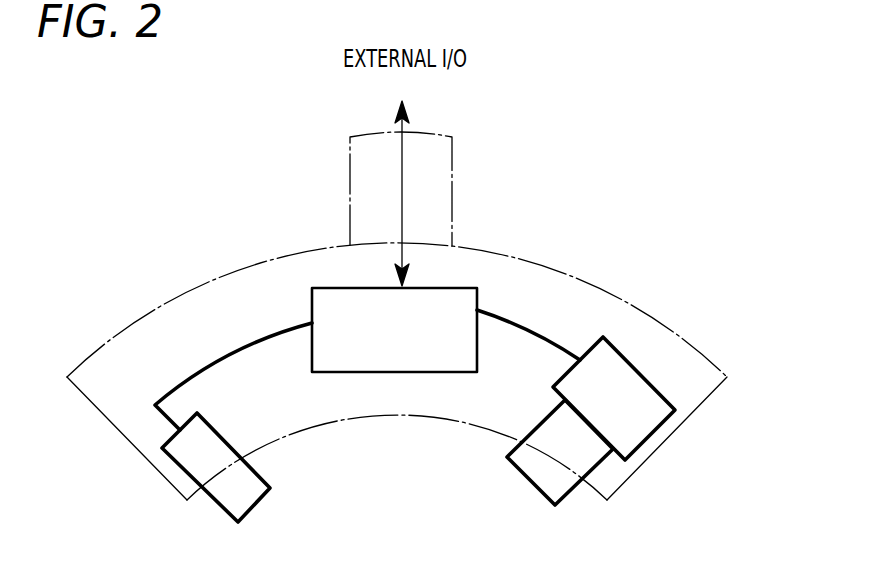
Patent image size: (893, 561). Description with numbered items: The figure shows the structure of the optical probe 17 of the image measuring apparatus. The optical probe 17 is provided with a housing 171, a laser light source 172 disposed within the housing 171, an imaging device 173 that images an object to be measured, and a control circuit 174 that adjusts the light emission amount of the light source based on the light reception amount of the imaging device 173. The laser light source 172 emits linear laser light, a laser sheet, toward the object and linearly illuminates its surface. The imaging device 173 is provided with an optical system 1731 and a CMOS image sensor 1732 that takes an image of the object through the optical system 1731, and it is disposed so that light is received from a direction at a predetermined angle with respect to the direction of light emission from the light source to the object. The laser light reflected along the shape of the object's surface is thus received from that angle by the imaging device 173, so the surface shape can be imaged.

The optical probe 17 is at (415, 334).
The housing 171 is at (182, 295).
The laser light source 172 is at (163, 448).
The imaging device 173 is at (591, 395).
The optical system 1731 is at (507, 457).
The CMOS image sensor 1732 is at (675, 410).
The control circuit 174 is at (312, 288).